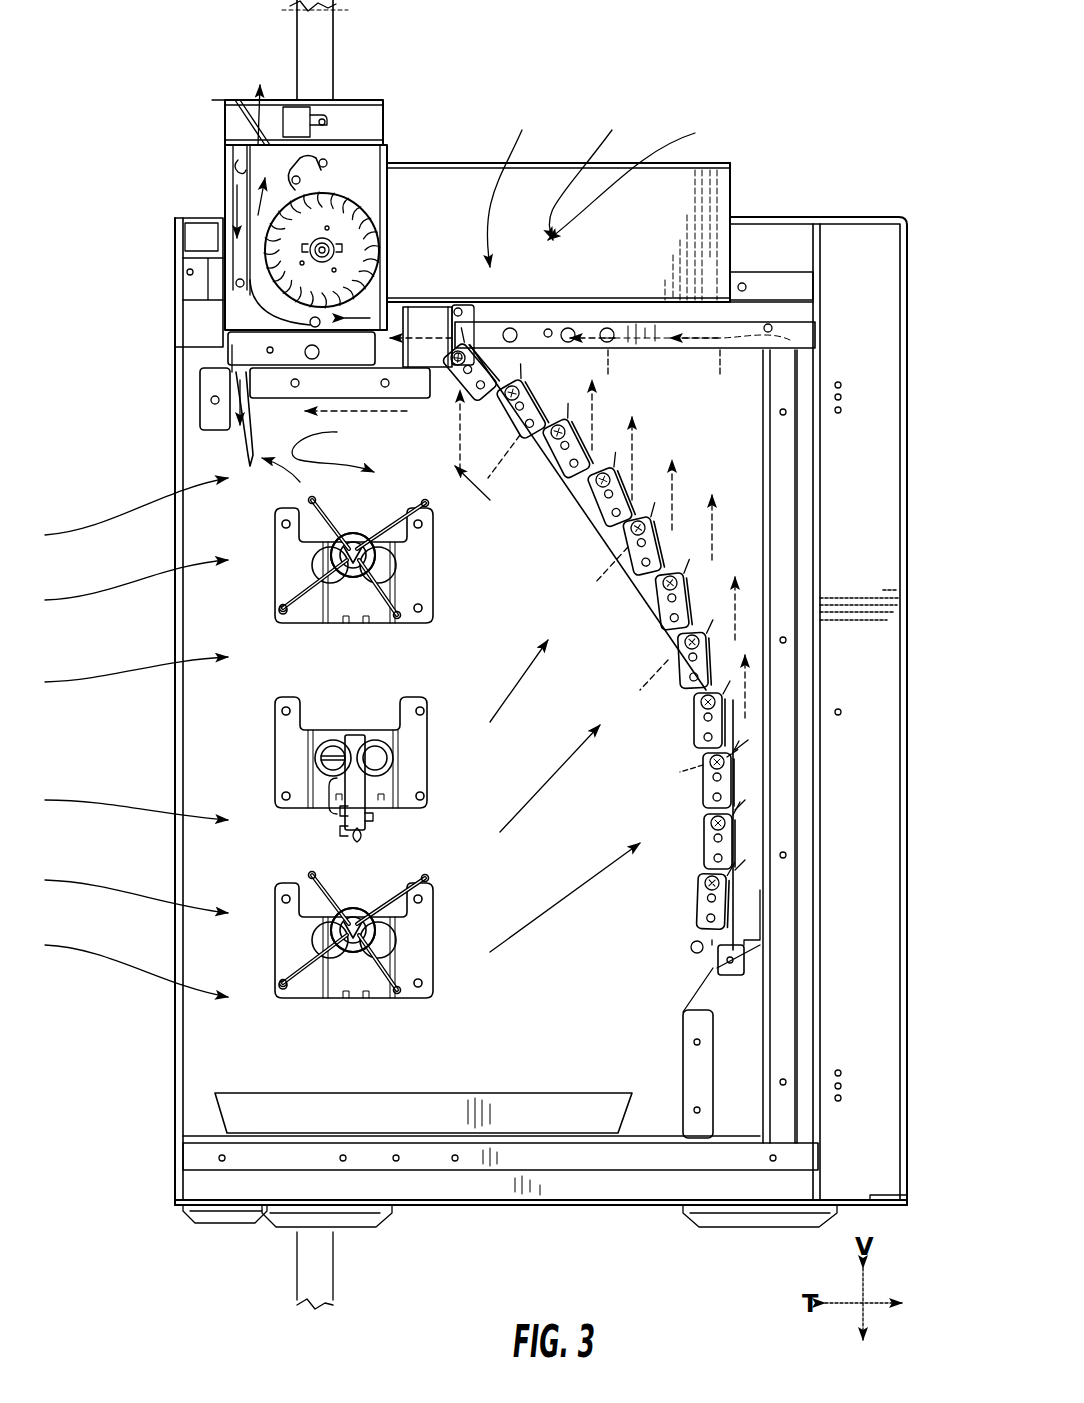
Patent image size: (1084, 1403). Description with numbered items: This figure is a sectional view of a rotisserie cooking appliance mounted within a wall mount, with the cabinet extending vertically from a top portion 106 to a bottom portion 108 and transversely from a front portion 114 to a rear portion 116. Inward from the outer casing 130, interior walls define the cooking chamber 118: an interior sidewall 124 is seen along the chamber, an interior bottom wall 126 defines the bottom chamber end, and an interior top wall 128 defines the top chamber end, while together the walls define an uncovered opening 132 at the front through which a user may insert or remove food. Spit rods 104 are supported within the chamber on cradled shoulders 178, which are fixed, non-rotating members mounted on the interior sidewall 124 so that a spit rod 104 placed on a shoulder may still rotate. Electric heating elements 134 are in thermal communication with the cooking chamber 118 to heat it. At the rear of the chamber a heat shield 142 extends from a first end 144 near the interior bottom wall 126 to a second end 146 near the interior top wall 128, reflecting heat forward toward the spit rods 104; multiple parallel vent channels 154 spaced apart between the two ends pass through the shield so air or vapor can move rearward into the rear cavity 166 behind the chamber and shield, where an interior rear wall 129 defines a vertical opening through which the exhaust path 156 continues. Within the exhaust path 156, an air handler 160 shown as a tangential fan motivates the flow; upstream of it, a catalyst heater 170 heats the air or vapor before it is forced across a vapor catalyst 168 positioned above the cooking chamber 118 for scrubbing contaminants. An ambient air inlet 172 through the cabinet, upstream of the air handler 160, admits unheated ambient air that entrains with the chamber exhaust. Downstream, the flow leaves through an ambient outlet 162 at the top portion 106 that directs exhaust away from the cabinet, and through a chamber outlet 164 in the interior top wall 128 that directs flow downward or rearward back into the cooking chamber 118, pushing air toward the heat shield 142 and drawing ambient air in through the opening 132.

The spit rod 104 is at (355, 578).
The top portion 106 is at (453, 160).
The bottom portion 108 is at (500, 1208).
The front portion 114 is at (168, 236).
The rear portion 116 is at (912, 237).
The cooking chamber 118 is at (547, 1052).
The interior sidewall 124 is at (205, 1063).
The interior bottom wall 126 is at (655, 1145).
The interior top wall 128 is at (350, 372).
The interior rear wall 129 is at (800, 523).
The outer casing 130 is at (908, 462).
The opening 132 is at (173, 1036).
The heating element 134 is at (712, 884).
The heat shield 142 is at (606, 506).
The first end 144 is at (731, 966).
The second end 146 is at (477, 312).
The vent channel 154 is at (742, 758).
The exhaust path 156 is at (736, 430).
The air handler 160 is at (342, 198).
The ambient outlet 162 is at (282, 90).
The chamber outlet 164 is at (310, 430).
The rear cavity 166 is at (709, 413).
The vapor catalyst 168 is at (400, 298).
The catalyst heater 170 is at (463, 302).
The ambient air inlet 172 is at (710, 161).
The cradled shoulder 178 is at (412, 576).